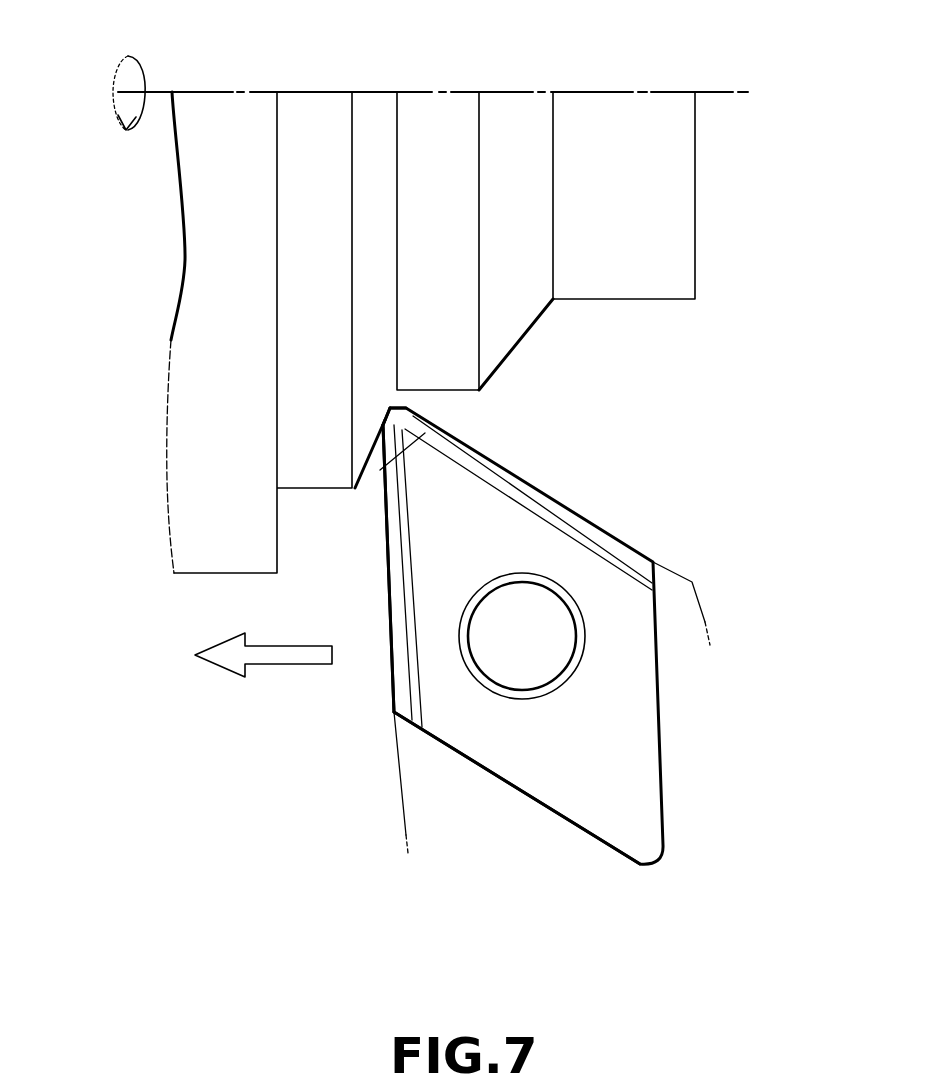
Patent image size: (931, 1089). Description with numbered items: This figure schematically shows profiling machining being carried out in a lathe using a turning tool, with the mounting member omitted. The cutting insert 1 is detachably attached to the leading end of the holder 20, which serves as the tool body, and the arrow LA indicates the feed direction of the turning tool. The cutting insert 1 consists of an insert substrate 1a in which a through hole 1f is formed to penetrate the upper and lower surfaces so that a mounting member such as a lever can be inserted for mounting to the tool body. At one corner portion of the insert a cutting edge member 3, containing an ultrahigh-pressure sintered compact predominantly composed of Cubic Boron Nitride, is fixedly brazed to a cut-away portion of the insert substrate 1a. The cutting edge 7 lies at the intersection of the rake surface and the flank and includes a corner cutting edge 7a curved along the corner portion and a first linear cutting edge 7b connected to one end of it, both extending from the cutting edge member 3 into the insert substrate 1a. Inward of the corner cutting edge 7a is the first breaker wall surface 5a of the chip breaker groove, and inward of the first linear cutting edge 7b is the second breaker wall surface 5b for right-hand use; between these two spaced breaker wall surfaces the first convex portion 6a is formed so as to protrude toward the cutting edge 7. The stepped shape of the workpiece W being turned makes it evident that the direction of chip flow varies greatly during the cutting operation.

The workpiece W is at (322, 113).
The cutting insert 1 is at (637, 722).
The insert substrate 1a is at (550, 782).
The through hole 1f is at (505, 688).
The cutting edge member 3 is at (422, 424).
The first breaker wall surface 5a is at (396, 408).
The second breaker wall surface 5b is at (392, 500).
The first convex portion 6a is at (388, 415).
The cutting edge 7 is at (384, 445).
The corner cutting edge 7a is at (400, 406).
The first linear cutting edge 7b is at (380, 470).
The holder 20 is at (418, 800).
The feed direction arrow LA is at (284, 654).